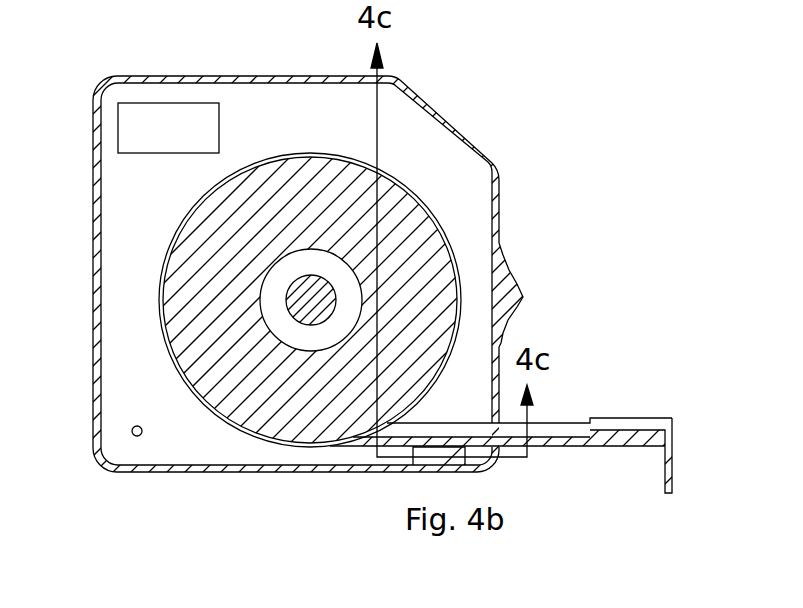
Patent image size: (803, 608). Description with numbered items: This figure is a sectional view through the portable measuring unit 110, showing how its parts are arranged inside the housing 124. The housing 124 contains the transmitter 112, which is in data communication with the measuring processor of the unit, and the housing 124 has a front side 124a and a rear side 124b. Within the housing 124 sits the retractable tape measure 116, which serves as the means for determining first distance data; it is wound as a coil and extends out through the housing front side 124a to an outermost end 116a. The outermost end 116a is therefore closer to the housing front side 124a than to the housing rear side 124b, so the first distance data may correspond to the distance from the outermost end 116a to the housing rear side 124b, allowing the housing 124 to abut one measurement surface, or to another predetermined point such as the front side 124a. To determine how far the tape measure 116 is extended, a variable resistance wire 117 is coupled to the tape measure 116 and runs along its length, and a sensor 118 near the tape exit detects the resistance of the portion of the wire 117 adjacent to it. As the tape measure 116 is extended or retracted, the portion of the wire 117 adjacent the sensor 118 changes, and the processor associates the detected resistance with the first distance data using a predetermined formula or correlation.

The portable measuring unit 110 is at (604, 95).
The transmitter 112 is at (158, 103).
The retractable tape measure 116 is at (646, 416).
The outermost end 116a is at (677, 444).
The variable resistance wire 117 is at (586, 447).
The sensor 118 is at (413, 450).
The housing 124 is at (494, 167).
The housing front side 124a is at (500, 210).
The housing rear side 124b is at (93, 440).